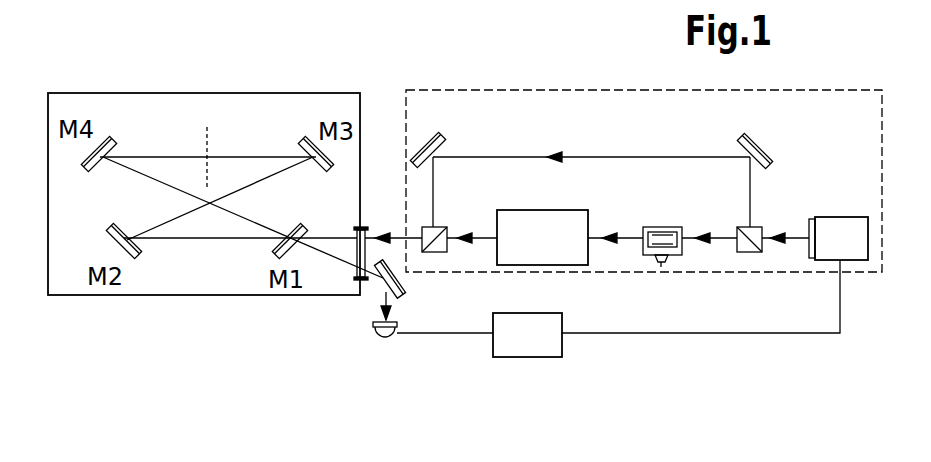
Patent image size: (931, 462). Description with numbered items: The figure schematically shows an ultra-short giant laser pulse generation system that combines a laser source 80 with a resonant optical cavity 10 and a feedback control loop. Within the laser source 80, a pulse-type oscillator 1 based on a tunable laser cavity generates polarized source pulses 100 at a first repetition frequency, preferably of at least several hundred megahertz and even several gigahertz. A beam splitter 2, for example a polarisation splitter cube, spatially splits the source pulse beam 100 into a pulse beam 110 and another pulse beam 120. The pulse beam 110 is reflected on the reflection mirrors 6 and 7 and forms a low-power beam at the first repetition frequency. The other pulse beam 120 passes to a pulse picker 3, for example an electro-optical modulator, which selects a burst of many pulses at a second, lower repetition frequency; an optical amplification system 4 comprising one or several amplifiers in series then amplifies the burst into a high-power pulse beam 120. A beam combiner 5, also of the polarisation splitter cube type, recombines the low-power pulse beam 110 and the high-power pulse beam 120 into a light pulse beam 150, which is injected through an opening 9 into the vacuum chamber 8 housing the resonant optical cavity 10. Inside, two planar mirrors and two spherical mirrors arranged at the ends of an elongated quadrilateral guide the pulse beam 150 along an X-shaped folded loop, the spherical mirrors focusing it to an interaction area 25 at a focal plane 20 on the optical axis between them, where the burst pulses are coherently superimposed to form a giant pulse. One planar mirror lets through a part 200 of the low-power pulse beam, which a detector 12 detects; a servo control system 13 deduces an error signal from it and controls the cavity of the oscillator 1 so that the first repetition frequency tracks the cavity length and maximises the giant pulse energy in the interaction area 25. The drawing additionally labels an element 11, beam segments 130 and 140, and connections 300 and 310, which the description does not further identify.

The pulse-type oscillator 1 is at (833, 217).
The beam splitter 2 is at (743, 253).
The pulse picker 3 is at (662, 267).
The optical amplification system 4 is at (542, 237).
The beam combiner 5 is at (438, 226).
The reflection mirror 6 is at (765, 133).
The reflection mirror 7 is at (423, 135).
The vacuum chamber 8 is at (122, 92).
The opening 9 is at (357, 247).
The resonant optical cavity 10 is at (180, 262).
The output mirror 11 is at (400, 296).
The detector 12 is at (375, 338).
The servo control system 13 is at (527, 335).
The focal plane 20 is at (207, 140).
The interaction area 25 is at (208, 157).
The laser source 80 is at (537, 90).
The source pulses 100 is at (795, 236).
The low-power pulse beam 110 is at (567, 157).
The high-power pulse beam 120 is at (723, 230).
The modulated beam 130 is at (629, 227).
The combined beam 140 is at (480, 240).
The light pulse beam 150 is at (386, 236).
The part of the low-power pulse beam 200 is at (382, 297).
The detector signal line 300 is at (452, 337).
The control signal line 310 is at (777, 334).